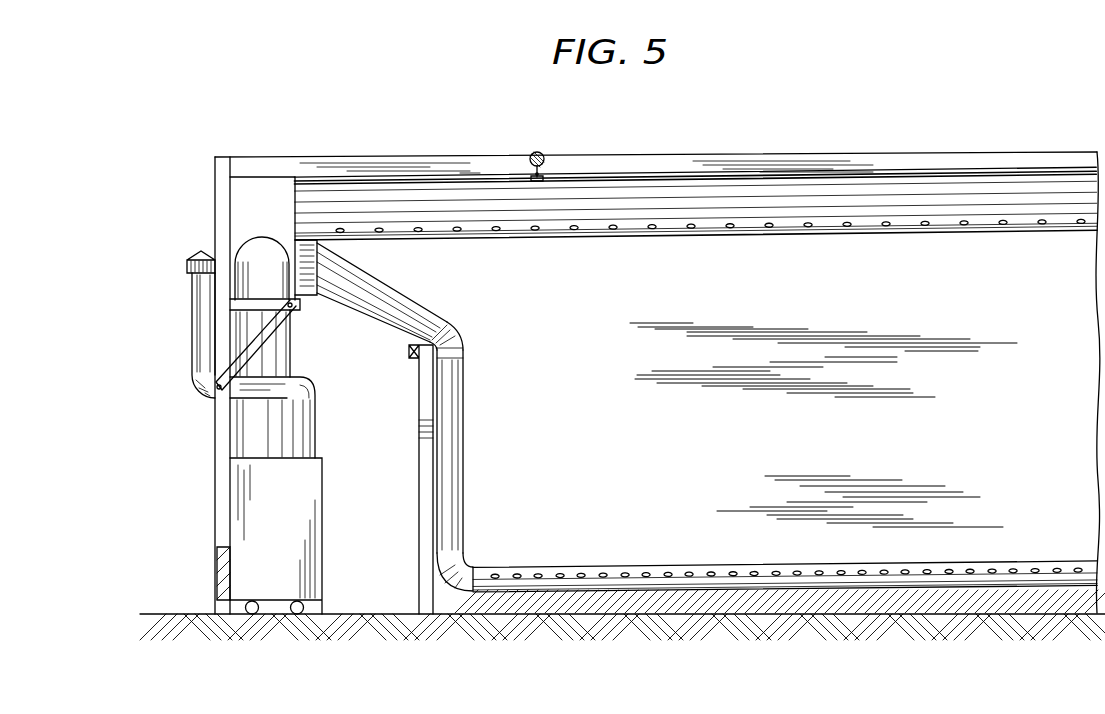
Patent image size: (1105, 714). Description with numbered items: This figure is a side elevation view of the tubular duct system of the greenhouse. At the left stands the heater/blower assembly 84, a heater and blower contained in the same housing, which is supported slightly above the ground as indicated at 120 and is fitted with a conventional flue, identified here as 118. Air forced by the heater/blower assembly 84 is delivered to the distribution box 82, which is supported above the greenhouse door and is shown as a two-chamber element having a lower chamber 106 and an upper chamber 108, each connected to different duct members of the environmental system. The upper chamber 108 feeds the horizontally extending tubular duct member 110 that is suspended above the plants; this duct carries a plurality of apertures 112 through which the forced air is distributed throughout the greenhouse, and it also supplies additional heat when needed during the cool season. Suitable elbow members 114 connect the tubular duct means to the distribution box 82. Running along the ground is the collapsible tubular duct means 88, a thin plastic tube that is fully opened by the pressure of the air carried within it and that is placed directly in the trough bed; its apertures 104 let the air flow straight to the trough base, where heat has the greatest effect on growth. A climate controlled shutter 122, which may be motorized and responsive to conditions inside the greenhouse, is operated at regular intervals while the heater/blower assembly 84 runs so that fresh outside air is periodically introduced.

The distribution box 82 is at (240, 233).
The heater/blower assembly 84 is at (296, 552).
The collapsible tubular duct means 88 is at (784, 551).
The apertures 104 is at (733, 571).
The lower chamber 106 is at (276, 277).
The upper chamber 108 is at (278, 221).
The horizontally extending tubular duct member 110 is at (695, 228).
The apertures 112 is at (770, 232).
The elbow members 114 is at (335, 240).
The vent pipe 118 is at (200, 340).
The support above the ground 120 is at (322, 607).
The climate controlled shutter 122 is at (220, 570).